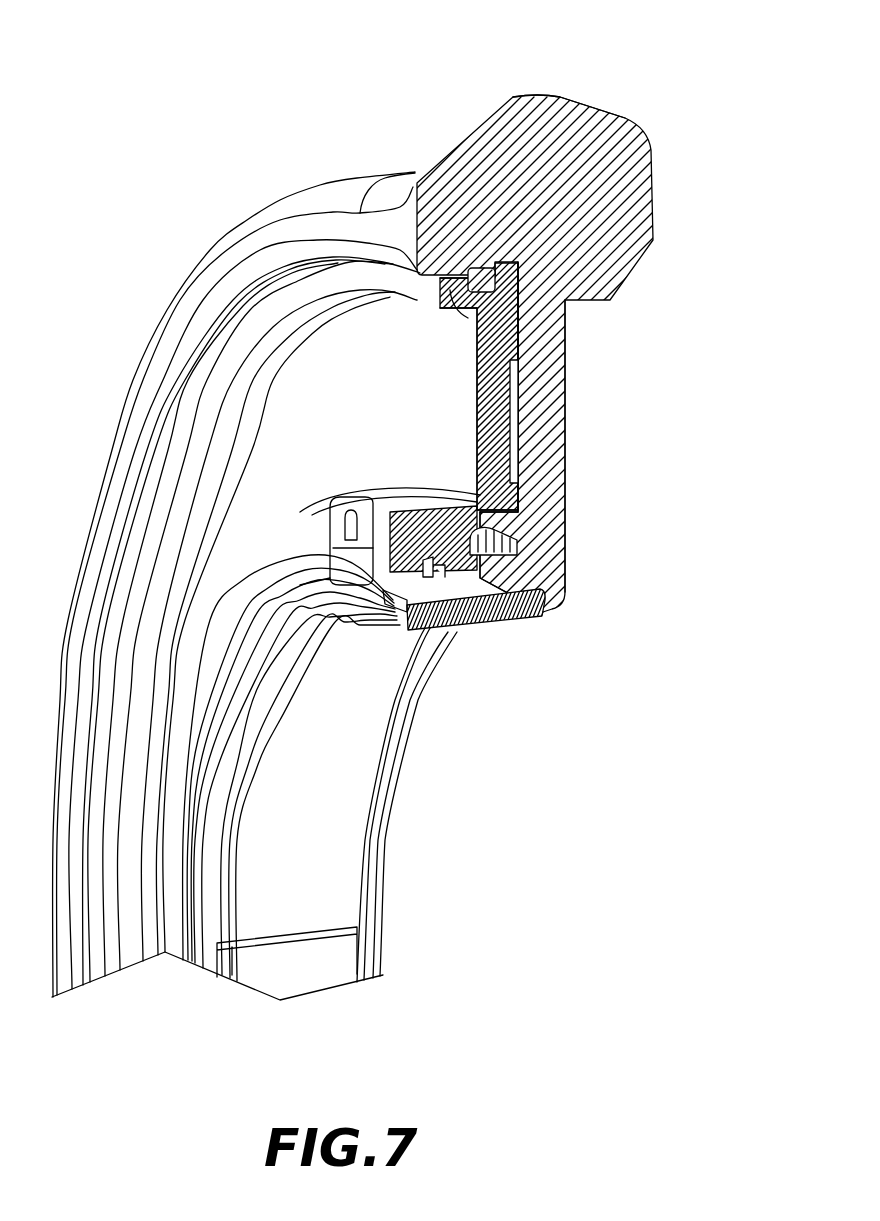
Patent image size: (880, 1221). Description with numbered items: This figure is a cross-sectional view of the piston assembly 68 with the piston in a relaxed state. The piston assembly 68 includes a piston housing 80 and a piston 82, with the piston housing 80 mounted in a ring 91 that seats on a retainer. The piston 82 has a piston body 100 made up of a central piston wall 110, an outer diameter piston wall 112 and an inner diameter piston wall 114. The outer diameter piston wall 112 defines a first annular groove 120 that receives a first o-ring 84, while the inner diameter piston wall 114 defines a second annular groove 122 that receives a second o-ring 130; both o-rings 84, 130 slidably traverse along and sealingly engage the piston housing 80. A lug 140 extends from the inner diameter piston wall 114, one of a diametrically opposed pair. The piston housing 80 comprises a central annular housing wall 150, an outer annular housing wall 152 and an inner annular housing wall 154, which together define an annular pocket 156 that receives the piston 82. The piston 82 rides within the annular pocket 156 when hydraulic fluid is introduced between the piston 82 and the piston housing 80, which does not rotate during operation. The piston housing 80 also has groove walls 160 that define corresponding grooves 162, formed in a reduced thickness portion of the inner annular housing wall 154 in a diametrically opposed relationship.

The piston assembly 68 is at (654, 126).
The piston housing 80 is at (637, 217).
The piston 82 is at (497, 497).
The o-ring 84 is at (486, 310).
The ring 91 is at (391, 608).
The piston body 100 is at (490, 451).
The central piston wall 110 is at (497, 410).
The outer diameter piston wall 112 is at (449, 290).
The inner diameter piston wall 114 is at (482, 511).
The first annular groove 120 is at (520, 331).
The second annular groove 122 is at (482, 530).
The second o-ring 130 is at (495, 545).
The lug 140 is at (474, 638).
The central annular housing wall 150 is at (540, 422).
The outer annular housing wall 152 is at (548, 217).
The inner annular housing wall 154 is at (443, 603).
The annular pocket 156 is at (506, 378).
The groove wall 160 is at (369, 530).
The groove 162 is at (333, 512).